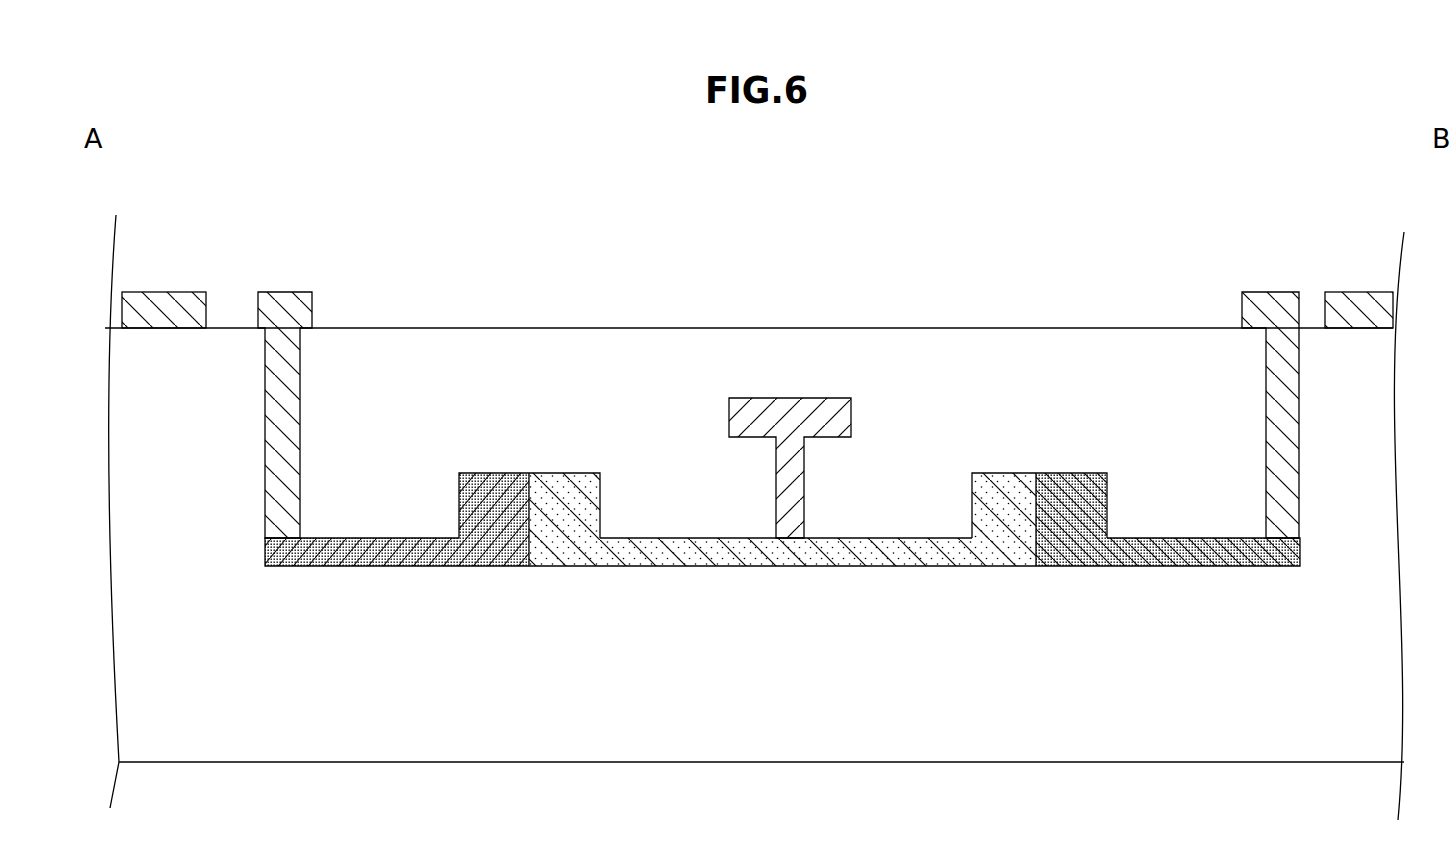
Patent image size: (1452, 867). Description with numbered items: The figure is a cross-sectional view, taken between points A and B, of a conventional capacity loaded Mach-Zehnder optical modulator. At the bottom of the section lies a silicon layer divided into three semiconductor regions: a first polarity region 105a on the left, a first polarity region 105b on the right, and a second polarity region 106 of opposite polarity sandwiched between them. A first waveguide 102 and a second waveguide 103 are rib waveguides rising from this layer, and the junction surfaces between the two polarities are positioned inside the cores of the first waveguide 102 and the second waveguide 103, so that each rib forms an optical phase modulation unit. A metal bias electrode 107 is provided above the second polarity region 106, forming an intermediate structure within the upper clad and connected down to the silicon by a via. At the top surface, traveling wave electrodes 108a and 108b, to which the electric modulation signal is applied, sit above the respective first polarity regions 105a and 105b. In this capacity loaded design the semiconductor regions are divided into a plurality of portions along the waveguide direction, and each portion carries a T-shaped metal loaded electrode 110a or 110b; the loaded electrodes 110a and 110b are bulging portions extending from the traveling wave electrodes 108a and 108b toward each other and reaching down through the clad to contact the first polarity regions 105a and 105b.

The first waveguide 102 is at (598, 462).
The second waveguide 103 is at (1104, 462).
The first polarity region 105a is at (347, 537).
The first polarity region 105b is at (1136, 538).
The second polarity region 106 is at (658, 538).
The bias electrode 107 is at (773, 398).
The traveling wave electrode 108a is at (165, 292).
The traveling wave electrode 108b is at (1348, 292).
The loaded electrode 110a is at (275, 292).
The loaded electrode 110b is at (1264, 292).